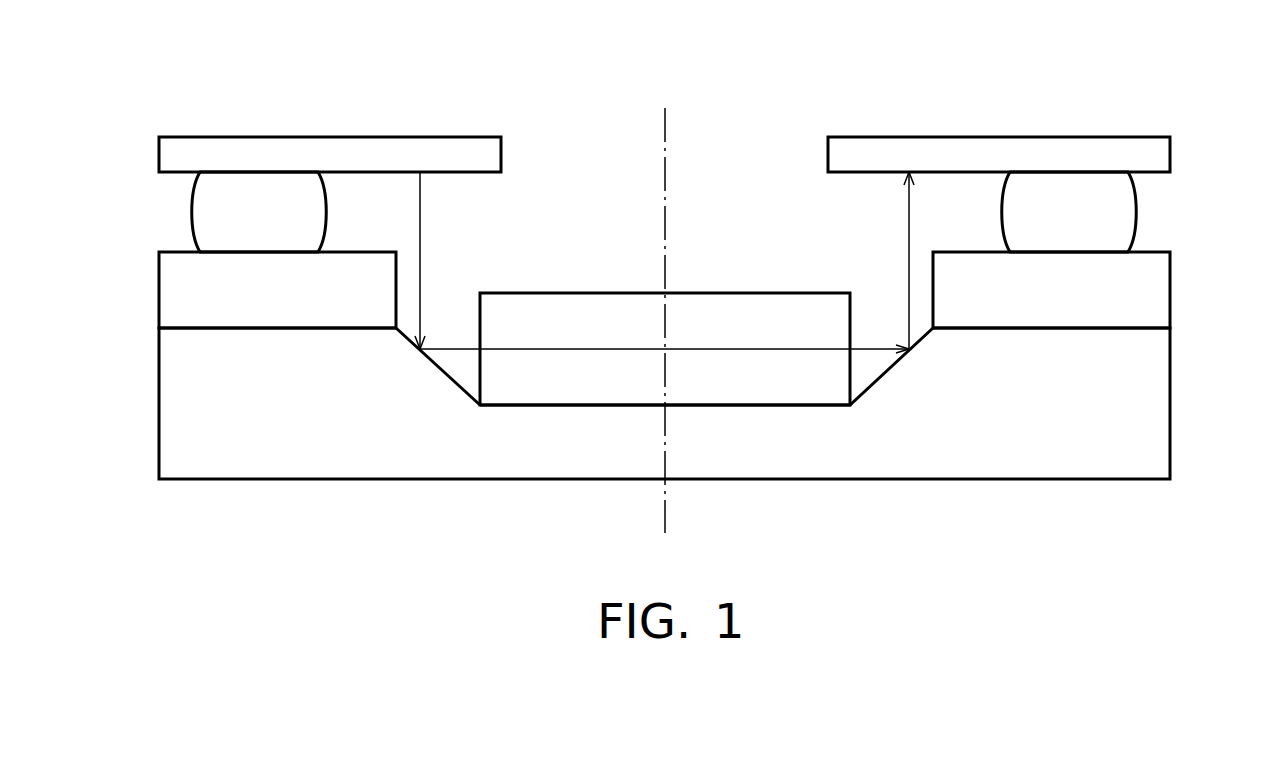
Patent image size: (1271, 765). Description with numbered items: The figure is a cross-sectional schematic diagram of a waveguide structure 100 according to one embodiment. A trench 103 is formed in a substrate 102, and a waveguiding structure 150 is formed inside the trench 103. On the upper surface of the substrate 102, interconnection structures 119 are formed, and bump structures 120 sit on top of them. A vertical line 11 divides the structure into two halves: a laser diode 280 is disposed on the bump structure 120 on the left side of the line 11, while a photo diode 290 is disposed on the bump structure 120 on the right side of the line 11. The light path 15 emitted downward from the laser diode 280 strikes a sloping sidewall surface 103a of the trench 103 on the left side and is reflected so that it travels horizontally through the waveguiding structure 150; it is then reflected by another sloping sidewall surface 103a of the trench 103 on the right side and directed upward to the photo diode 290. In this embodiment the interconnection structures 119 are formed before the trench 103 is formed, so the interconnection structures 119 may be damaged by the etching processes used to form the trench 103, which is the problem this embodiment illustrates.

The waveguide structure 100 is at (640, 42).
The substrate 102 is at (1160, 416).
The trench 103 is at (664, 376).
The sloping sidewall surface 103a is at (459, 387).
The interconnection structure 119 is at (170, 290).
The bump structure 120 is at (233, 213).
The waveguiding structure 150 is at (749, 310).
The laser diode 280 is at (331, 148).
The photo diode 290 is at (999, 148).
The line 11 is at (665, 212).
The light path 15 is at (418, 206).